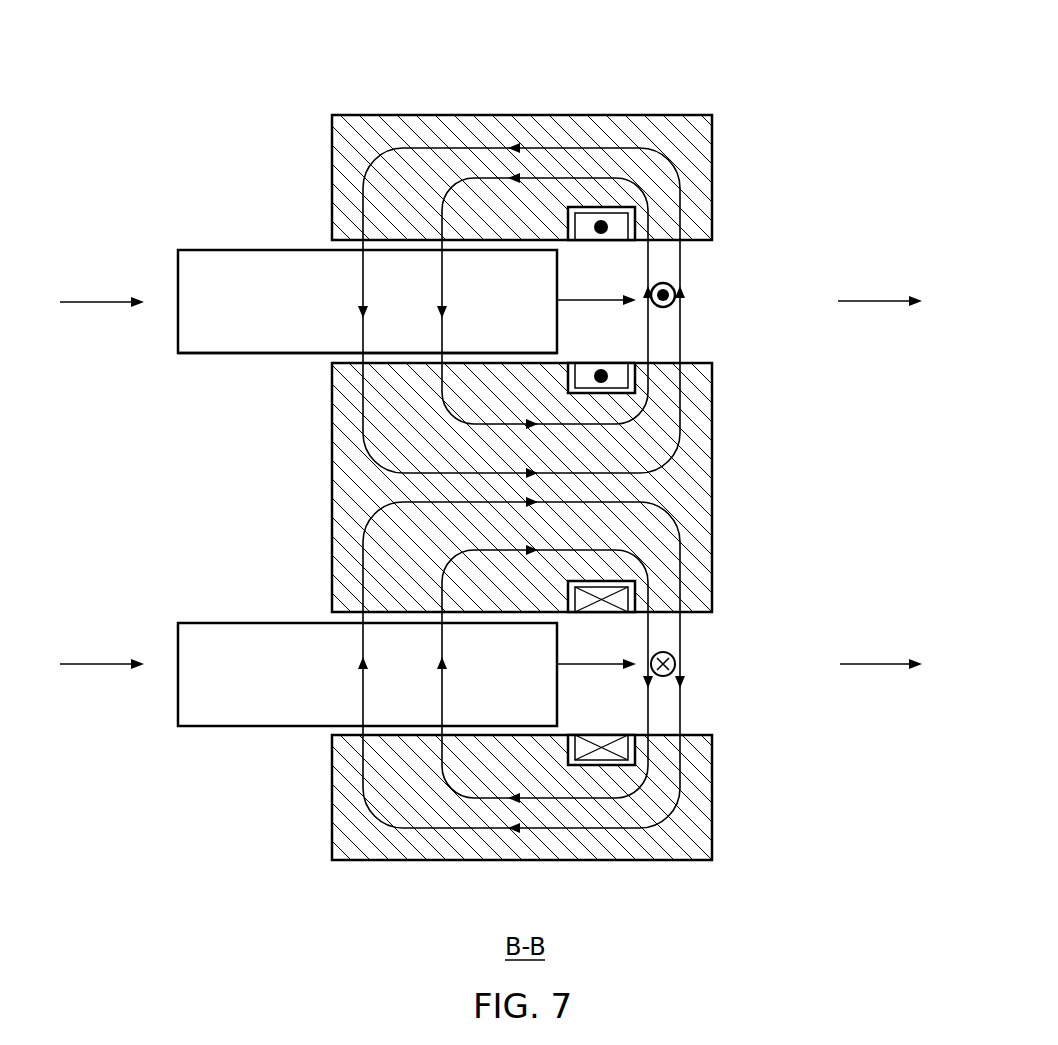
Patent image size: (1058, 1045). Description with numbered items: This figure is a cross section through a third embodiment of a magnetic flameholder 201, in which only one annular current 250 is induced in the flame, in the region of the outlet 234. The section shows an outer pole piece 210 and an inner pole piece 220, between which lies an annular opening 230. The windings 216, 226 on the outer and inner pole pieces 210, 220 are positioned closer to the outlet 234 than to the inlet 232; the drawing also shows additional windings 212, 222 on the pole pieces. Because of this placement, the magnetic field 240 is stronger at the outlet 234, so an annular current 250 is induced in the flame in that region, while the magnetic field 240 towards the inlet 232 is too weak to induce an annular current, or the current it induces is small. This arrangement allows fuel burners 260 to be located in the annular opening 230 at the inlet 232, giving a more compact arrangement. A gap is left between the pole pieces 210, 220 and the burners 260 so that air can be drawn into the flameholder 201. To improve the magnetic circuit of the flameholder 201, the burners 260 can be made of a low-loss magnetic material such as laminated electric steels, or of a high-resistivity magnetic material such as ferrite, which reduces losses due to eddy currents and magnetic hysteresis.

The magnetic flameholder 201 is at (853, 44).
The outer pole piece 210 is at (712, 150).
The coil 212 is at (603, 207).
The winding 216 is at (600, 765).
The inner pole piece 220 is at (712, 548).
The coil 222 is at (600, 393).
The winding 226 is at (637, 598).
The annular opening 230 is at (612, 324).
The inlet 232 is at (320, 361).
The outlet 234 is at (736, 705).
The magnetic field 240 is at (675, 655).
The annular current 250 is at (680, 293).
The fuel burner 260 is at (213, 249).